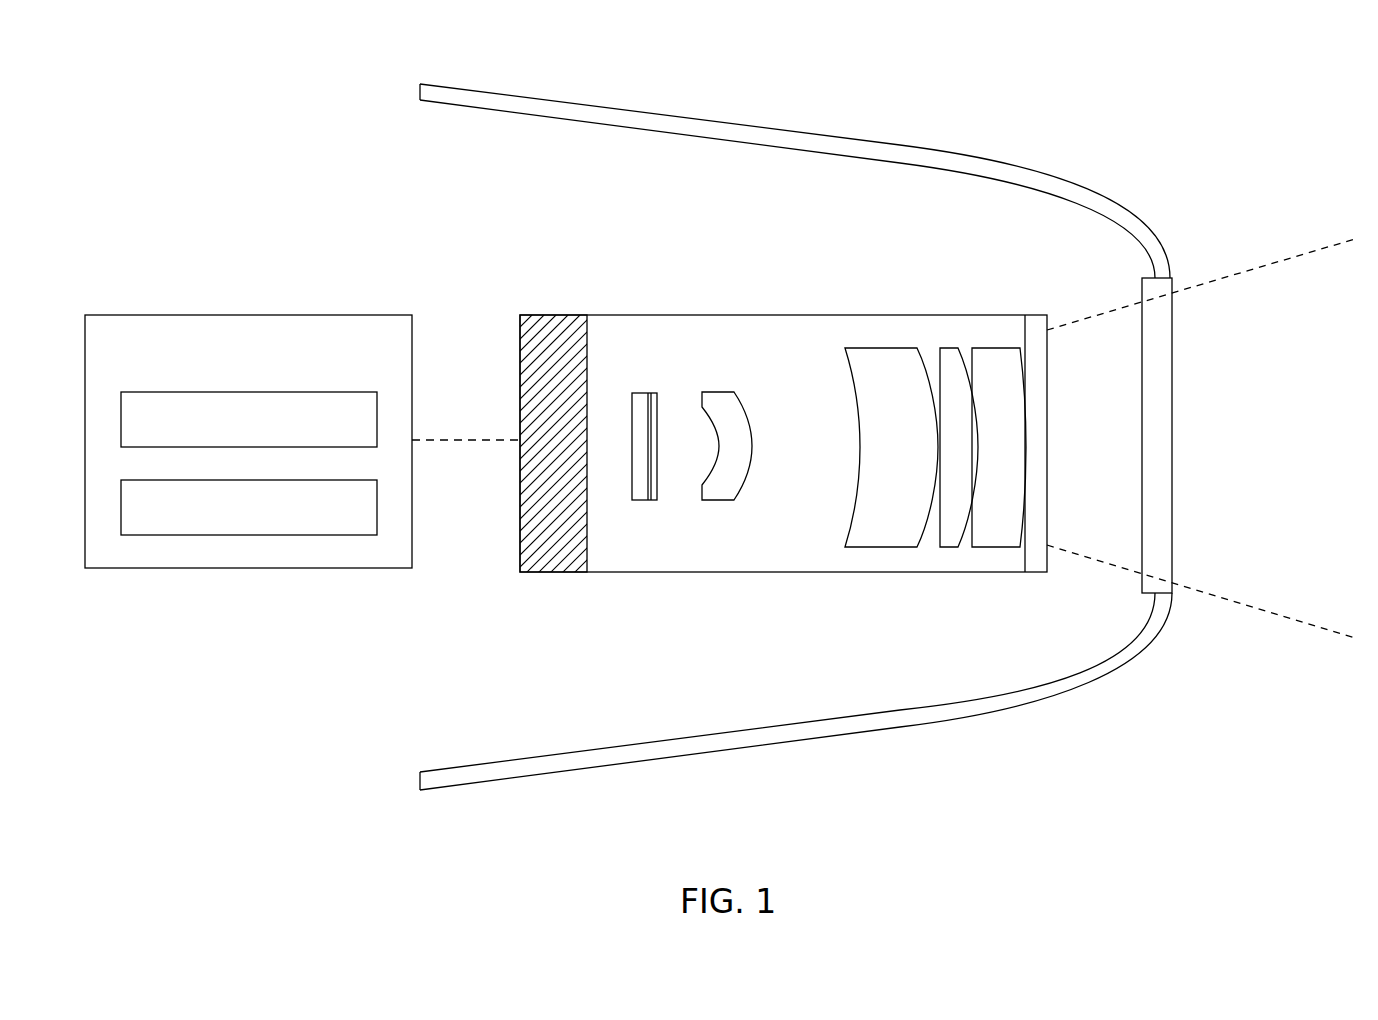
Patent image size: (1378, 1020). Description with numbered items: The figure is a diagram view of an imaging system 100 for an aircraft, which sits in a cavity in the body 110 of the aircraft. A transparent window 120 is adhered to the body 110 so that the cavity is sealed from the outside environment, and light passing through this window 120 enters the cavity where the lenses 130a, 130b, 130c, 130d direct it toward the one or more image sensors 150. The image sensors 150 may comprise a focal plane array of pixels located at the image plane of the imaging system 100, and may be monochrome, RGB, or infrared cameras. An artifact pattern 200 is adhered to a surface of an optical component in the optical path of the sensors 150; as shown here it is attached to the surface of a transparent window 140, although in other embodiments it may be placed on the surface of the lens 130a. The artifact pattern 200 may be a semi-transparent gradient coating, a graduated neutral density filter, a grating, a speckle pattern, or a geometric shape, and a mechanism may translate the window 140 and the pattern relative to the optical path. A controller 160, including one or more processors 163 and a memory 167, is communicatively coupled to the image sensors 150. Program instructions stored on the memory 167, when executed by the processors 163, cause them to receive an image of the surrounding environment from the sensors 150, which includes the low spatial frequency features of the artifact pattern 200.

The imaging system 100 is at (533, 54).
The body 110 is at (740, 124).
The window 120 is at (1172, 343).
The lens 130a is at (715, 392).
The lens 130b is at (880, 348).
The lens 130c is at (948, 348).
The lens 130d is at (1000, 348).
The transparent window 140 is at (642, 500).
The image sensor 150 is at (552, 315).
The controller 160 is at (302, 441).
The processor 163 is at (249, 419).
The memory 167 is at (249, 507).
The artifact pattern 200 is at (653, 500).